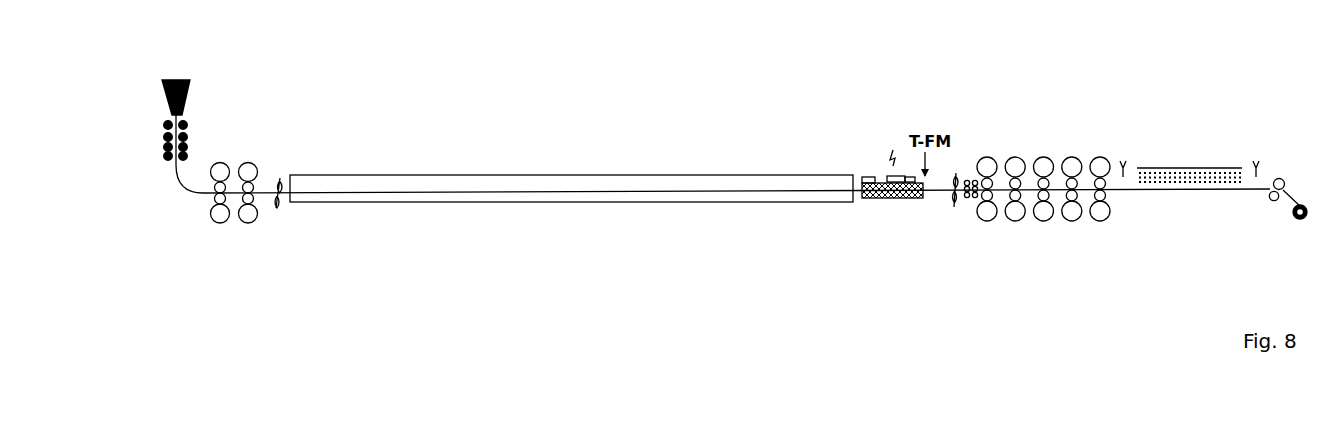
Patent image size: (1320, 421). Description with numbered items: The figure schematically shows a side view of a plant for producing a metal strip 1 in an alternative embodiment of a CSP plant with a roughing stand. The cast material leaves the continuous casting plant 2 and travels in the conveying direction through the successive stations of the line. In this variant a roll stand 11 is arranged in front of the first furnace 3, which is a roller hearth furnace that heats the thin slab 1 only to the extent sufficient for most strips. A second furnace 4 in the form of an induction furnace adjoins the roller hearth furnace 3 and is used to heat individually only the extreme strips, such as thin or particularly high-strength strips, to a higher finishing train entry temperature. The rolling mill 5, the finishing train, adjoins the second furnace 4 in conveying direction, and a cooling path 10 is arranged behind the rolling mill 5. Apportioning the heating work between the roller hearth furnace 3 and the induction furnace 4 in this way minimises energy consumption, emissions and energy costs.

The metal strip 1 is at (938, 191).
The continuous casting plant 2 is at (160, 103).
The first furnace 3 is at (545, 183).
The second furnace 4 is at (880, 187).
The rolling mill 5 is at (1035, 138).
The cooling path 10 is at (1185, 158).
The roll stand 11 is at (242, 149).